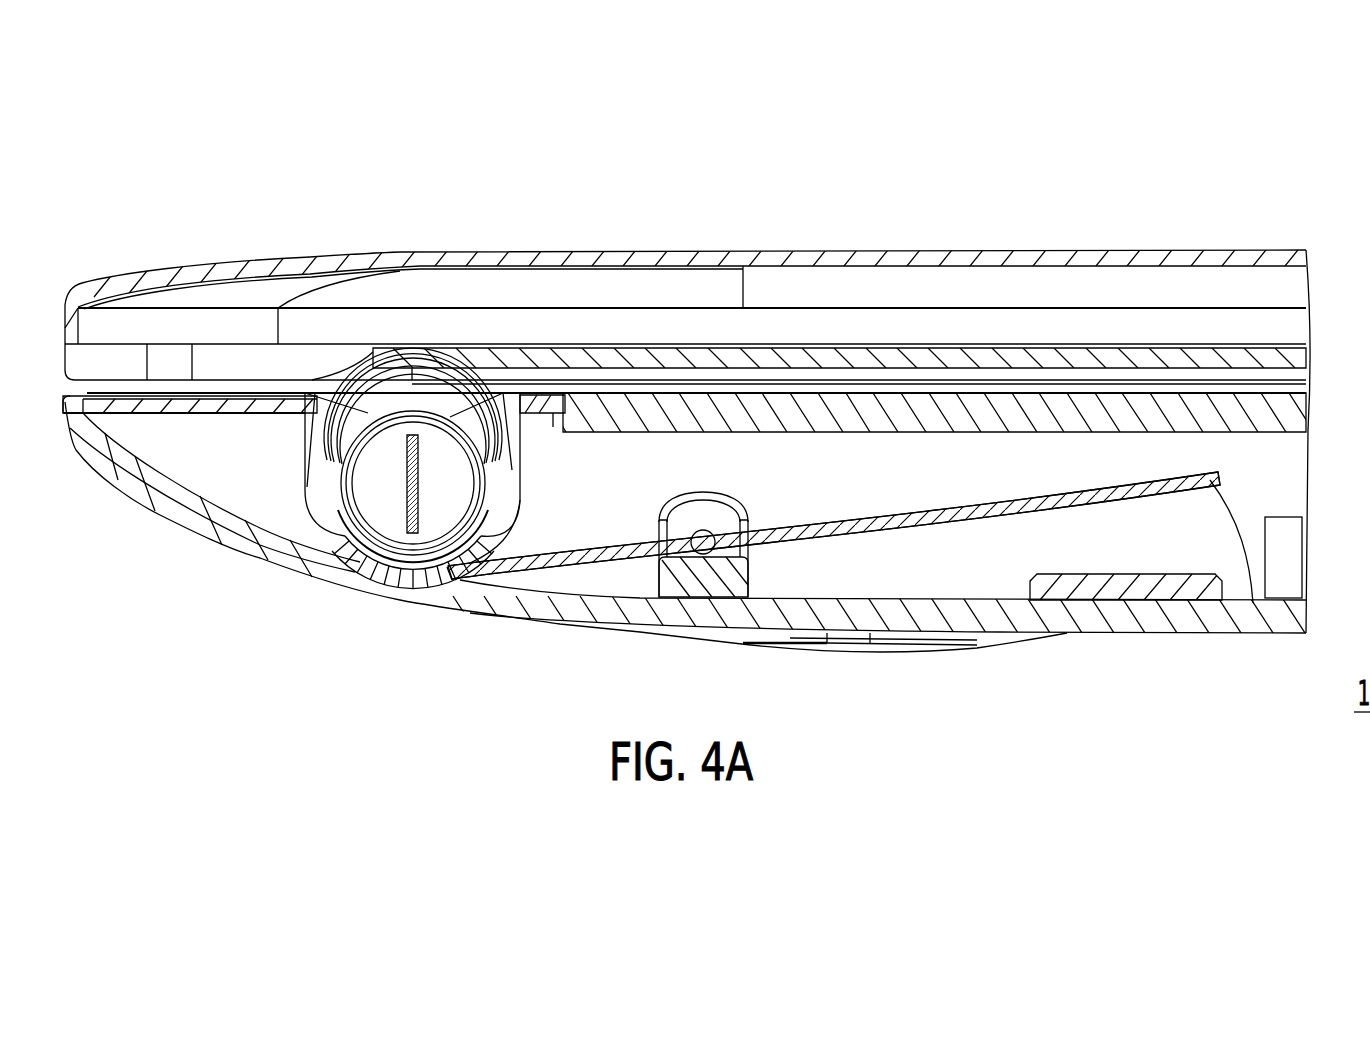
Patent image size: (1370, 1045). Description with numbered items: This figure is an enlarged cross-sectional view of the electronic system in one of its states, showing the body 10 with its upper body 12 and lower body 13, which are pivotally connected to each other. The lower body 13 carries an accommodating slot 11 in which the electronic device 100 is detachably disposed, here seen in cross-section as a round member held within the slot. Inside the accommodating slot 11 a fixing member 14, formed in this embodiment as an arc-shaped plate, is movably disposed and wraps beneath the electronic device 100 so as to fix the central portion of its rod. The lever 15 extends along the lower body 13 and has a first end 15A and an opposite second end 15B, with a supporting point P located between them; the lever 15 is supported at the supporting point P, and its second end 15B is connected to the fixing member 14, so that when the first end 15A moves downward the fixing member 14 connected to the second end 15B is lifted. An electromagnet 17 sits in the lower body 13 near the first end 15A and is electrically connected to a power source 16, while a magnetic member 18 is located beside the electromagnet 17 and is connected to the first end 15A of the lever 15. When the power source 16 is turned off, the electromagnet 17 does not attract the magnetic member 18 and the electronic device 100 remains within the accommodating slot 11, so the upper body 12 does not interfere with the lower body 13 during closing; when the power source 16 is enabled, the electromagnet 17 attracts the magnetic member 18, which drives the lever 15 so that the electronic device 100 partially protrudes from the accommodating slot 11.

The body 10 is at (1073, 165).
The accommodating slot 11 is at (338, 417).
The upper body 12 is at (127, 280).
The lower body 13 is at (133, 475).
The fixing member 14 is at (368, 548).
The lever 15 is at (787, 533).
The first end 15A is at (1253, 603).
The second end 15B is at (453, 566).
The power source 16 is at (1290, 552).
The electromagnet 17 is at (1130, 592).
The magnetic member 18 is at (1187, 473).
The electronic device 100 is at (487, 440).
The supporting point P is at (703, 542).